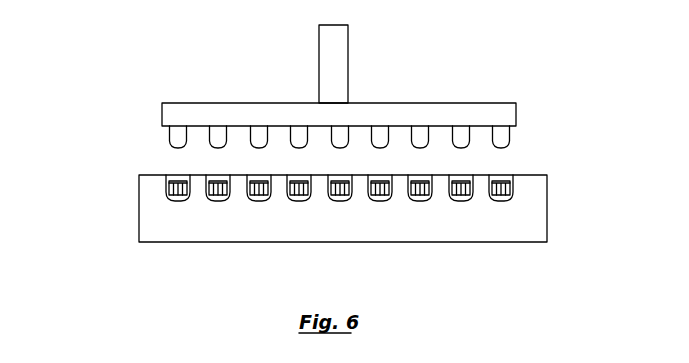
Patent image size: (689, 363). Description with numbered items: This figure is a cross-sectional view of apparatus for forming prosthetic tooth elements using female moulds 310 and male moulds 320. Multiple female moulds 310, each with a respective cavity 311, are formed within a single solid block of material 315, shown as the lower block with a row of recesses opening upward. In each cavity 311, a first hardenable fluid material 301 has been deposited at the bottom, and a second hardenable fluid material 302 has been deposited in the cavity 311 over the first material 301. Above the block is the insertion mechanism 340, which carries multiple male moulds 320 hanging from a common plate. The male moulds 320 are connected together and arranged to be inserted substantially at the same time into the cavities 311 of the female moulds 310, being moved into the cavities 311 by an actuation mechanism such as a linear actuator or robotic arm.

The insertion mechanism 340 is at (167, 113).
The male mould 320 is at (177, 132).
The single solid block of material 315 is at (535, 214).
The female mould 310 is at (289, 232).
The cavity 311 is at (176, 232).
The second hardenable fluid material 302 is at (190, 192).
The first hardenable fluid material 301 is at (178, 198).